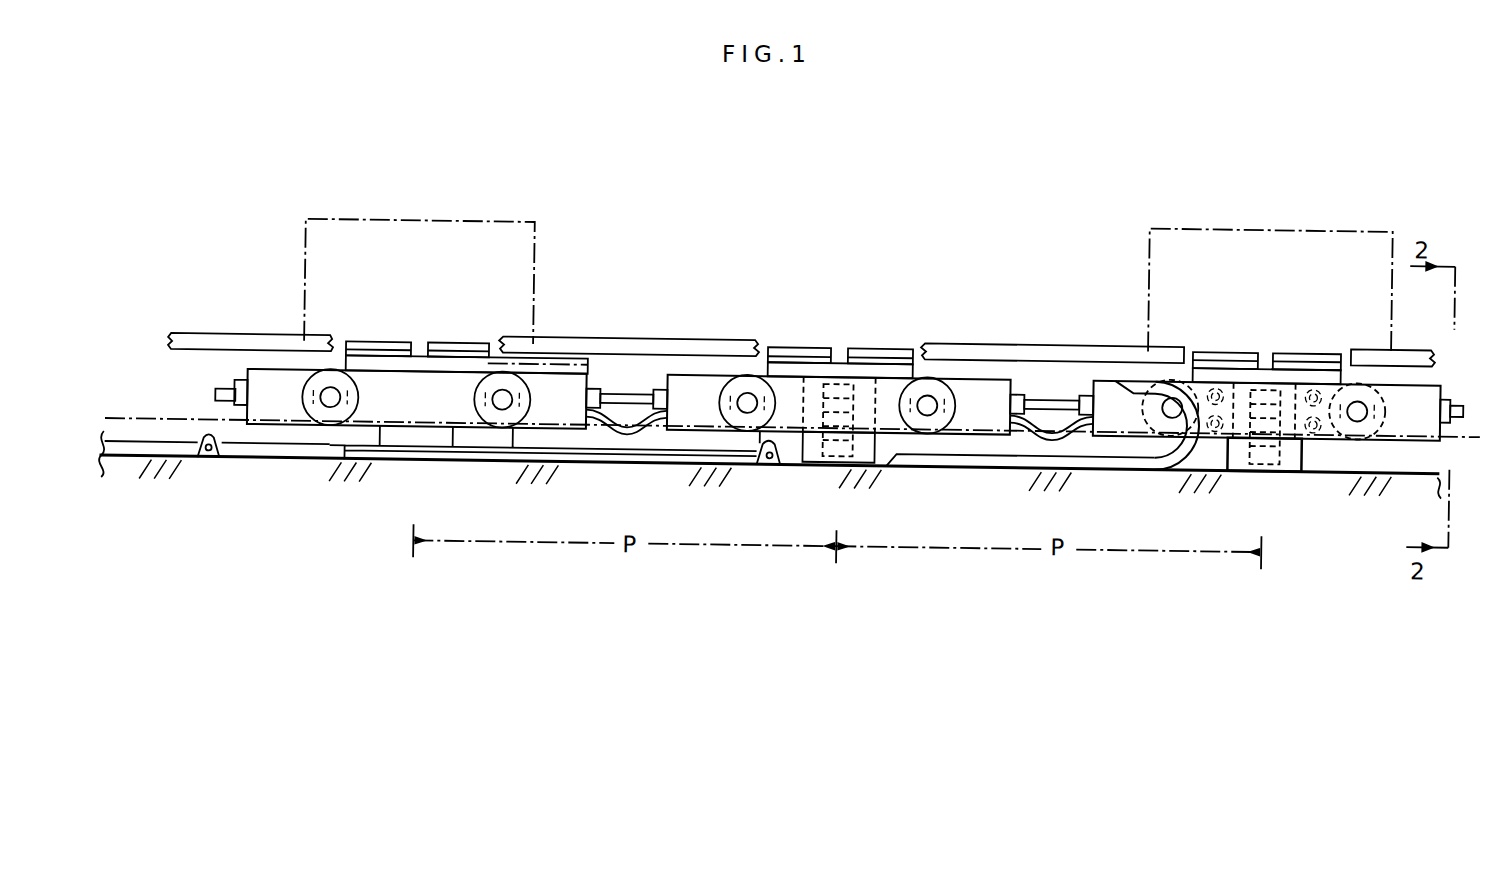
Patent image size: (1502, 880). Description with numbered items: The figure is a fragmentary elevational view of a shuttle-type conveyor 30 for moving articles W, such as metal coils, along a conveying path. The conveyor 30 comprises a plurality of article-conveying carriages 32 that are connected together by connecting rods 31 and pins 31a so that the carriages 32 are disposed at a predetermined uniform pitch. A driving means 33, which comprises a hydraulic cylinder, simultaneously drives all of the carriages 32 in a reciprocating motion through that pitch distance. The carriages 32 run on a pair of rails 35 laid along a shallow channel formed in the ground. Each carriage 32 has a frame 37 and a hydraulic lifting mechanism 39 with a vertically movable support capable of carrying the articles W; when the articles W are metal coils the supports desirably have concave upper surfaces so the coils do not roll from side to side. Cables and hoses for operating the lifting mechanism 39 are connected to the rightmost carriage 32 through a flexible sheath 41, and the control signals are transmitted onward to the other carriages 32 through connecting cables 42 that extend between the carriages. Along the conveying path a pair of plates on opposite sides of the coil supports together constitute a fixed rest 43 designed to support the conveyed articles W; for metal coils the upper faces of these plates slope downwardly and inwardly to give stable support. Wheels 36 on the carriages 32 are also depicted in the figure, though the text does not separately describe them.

The shuttle-type conveyor 30 is at (223, 306).
The connecting rod 31 is at (237, 376).
The pin 31a is at (597, 380).
The article-conveying carriage 32 is at (550, 361).
The driving means 33 is at (305, 456).
The rail 35 is at (152, 418).
The wheel 36 is at (347, 409).
The frame 37 is at (265, 378).
The hydraulic lifting mechanism 39 is at (817, 445).
The flexible sheath 41 is at (928, 463).
The connecting cable 42 is at (627, 430).
The fixed rest 43 is at (197, 332).
The article W is at (480, 214).